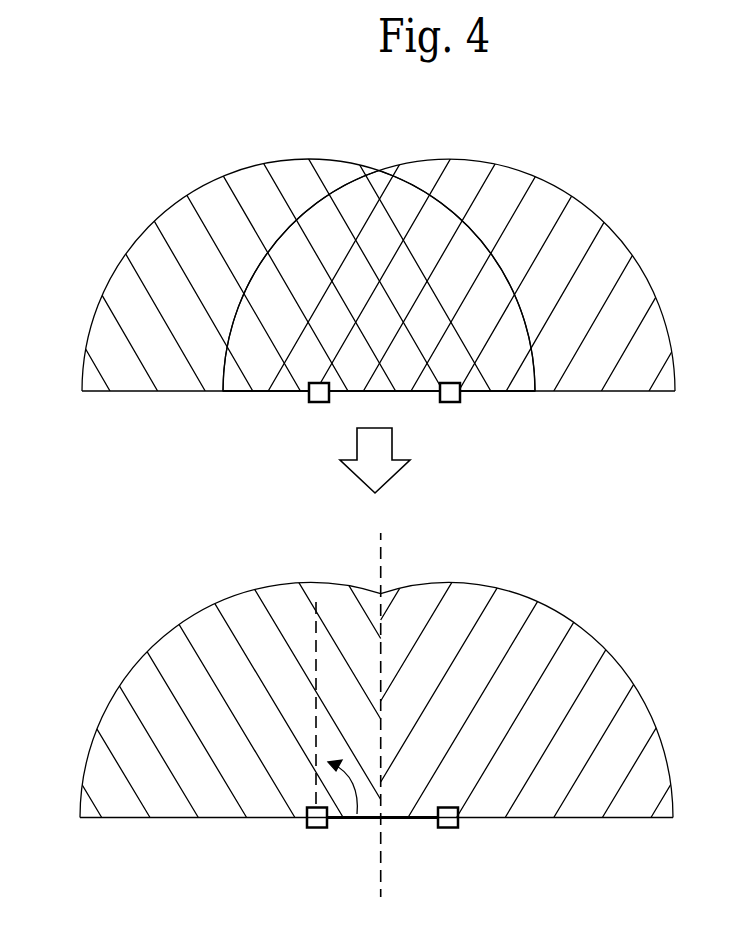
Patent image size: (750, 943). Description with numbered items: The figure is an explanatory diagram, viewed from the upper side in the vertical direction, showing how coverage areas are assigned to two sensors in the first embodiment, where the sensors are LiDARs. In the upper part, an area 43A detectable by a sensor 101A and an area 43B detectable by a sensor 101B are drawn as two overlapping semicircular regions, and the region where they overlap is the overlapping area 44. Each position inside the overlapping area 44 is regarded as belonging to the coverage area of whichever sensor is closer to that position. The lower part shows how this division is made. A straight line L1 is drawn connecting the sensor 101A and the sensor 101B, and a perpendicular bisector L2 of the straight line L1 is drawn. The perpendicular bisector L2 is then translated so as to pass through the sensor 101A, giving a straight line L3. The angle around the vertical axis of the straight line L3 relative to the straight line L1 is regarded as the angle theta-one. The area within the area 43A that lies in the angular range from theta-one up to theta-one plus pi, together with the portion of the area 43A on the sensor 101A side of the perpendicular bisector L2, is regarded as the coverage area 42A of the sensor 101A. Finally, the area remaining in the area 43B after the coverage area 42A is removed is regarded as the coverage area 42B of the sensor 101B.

The area detectable by sensor 101A 43A is at (142, 244).
The area detectable by sensor 101B 43B is at (622, 247).
The overlapping area 44 is at (377, 170).
The sensor 101A is at (310, 403).
The sensor 101B is at (453, 403).
The coverage area of sensor 101A 42A is at (142, 667).
The coverage area of sensor 101B 42B is at (560, 620).
The straight line L1 is at (393, 821).
The perpendicular bisector L2 is at (381, 558).
The straight line L3 is at (316, 620).